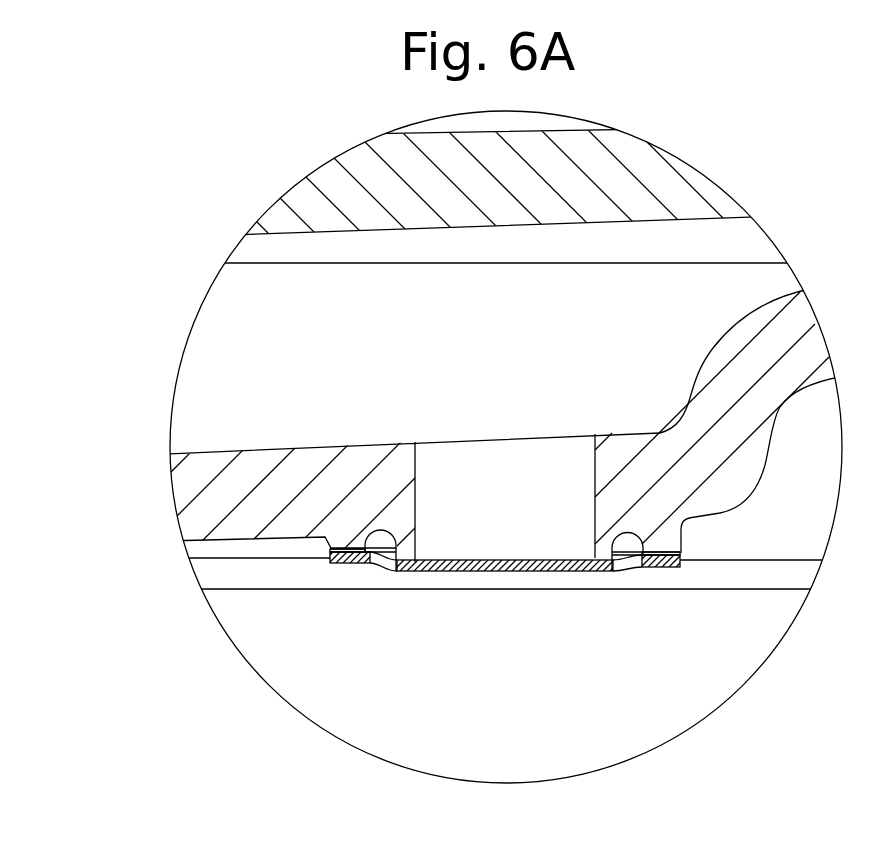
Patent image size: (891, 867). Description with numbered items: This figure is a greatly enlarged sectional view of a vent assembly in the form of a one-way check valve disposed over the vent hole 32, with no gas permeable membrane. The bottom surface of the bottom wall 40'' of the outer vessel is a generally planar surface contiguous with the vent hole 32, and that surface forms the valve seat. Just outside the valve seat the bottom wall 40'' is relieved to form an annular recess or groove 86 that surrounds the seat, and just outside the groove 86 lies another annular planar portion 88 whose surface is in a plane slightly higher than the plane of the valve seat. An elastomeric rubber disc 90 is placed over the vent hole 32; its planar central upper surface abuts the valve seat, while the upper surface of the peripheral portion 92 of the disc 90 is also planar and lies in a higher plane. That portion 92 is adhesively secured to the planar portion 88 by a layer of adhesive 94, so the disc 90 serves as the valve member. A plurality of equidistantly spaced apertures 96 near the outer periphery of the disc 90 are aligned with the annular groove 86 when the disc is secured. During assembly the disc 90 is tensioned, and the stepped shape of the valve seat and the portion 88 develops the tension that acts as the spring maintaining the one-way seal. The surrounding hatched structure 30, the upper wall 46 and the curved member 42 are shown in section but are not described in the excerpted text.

The housing assembly 30 is at (290, 360).
The upper wall 46 is at (547, 205).
The flange wall 42 is at (732, 381).
The bottom wall 40'' is at (315, 474).
The vent hole 32 is at (417, 517).
The annular groove 86 is at (382, 540).
The annular planar portion 88 is at (353, 550).
The elastomeric disc 90 is at (492, 568).
The peripheral portion of the disc 92 is at (347, 562).
The layer of adhesive 94 is at (330, 555).
The apertures 96 is at (388, 565).